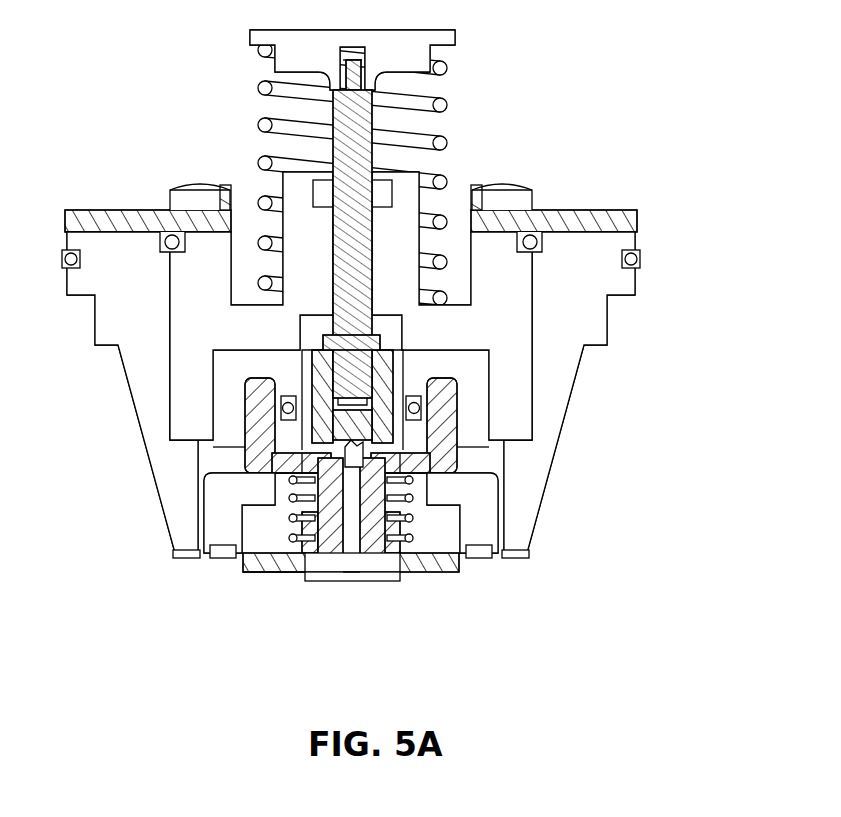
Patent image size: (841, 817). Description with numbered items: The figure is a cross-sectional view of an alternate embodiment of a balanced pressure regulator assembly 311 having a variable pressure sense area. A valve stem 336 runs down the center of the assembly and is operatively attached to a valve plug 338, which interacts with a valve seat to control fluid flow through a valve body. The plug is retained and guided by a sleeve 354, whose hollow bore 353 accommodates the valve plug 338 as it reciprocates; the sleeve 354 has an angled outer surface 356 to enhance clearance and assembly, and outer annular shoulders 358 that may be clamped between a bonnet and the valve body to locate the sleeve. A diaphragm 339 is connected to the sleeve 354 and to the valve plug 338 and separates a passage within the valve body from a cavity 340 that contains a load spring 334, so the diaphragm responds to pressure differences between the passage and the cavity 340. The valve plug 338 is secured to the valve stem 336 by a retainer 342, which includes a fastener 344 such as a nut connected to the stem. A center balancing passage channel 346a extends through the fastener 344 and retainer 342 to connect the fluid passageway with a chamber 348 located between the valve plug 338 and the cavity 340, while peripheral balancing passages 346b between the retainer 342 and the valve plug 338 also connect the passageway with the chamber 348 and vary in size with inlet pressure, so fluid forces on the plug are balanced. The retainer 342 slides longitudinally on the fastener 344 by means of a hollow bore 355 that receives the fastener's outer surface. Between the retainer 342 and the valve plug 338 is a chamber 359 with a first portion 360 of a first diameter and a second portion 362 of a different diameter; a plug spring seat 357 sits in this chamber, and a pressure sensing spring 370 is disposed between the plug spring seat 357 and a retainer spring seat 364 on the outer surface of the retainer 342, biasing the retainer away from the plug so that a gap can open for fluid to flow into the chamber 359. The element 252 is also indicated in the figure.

The balanced pressure regulator assembly 311 is at (620, 42).
The load spring 334 is at (258, 86).
The cavity 340 is at (235, 132).
The valve stem 336 is at (362, 120).
The sleeve 354 is at (595, 318).
The outer annular shoulders 358 is at (620, 300).
The angled outer surface 356 is at (550, 370).
The chamber 348 is at (225, 412).
The hollow bore 353 is at (397, 452).
The plug spring seat 357 is at (285, 467).
The diaphragm 339 is at (270, 440).
The first portion 360 is at (255, 520).
The chamber 359 is at (455, 518).
The hollow bore 355 is at (480, 520).
The pressure sensing spring 370 is at (372, 455).
The second portion 362 is at (405, 480).
The peripheral balancing passages 346b is at (200, 550).
The valve plug 338 is at (495, 560).
The fastener 344 is at (335, 580).
The retainer spring seat 364 is at (290, 570).
The retainer 342 is at (432, 562).
The outlet 252 is at (312, 578).
The center balancing passage channel 346a is at (352, 575).